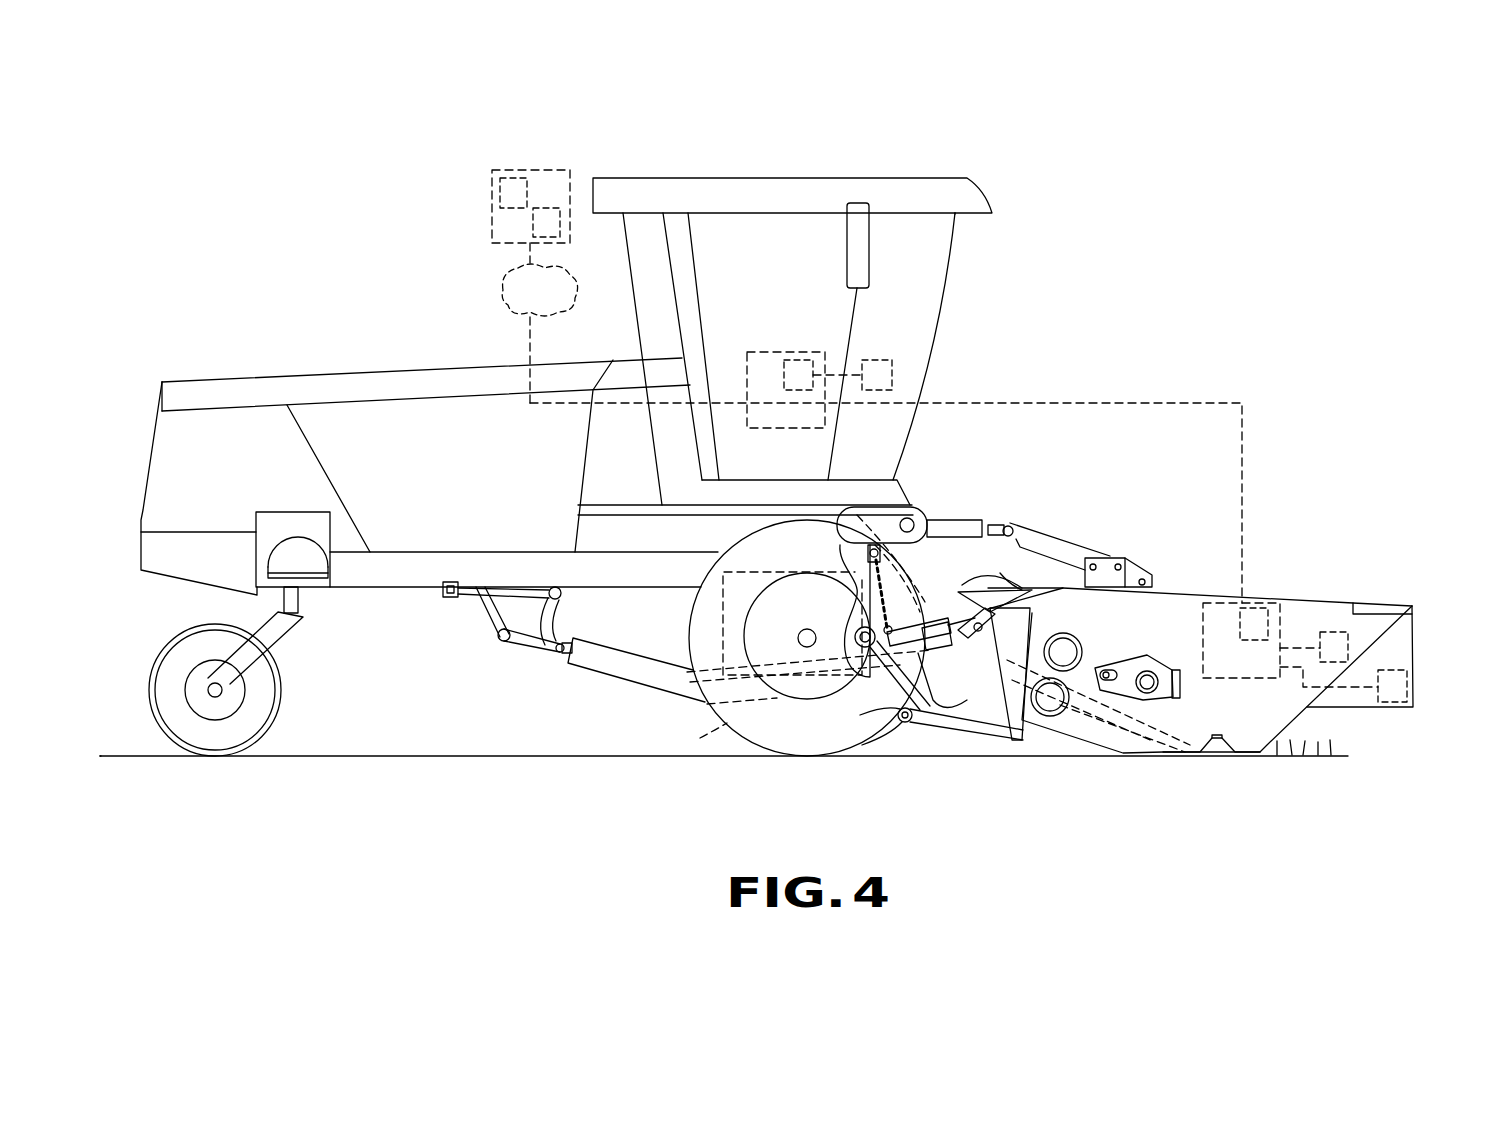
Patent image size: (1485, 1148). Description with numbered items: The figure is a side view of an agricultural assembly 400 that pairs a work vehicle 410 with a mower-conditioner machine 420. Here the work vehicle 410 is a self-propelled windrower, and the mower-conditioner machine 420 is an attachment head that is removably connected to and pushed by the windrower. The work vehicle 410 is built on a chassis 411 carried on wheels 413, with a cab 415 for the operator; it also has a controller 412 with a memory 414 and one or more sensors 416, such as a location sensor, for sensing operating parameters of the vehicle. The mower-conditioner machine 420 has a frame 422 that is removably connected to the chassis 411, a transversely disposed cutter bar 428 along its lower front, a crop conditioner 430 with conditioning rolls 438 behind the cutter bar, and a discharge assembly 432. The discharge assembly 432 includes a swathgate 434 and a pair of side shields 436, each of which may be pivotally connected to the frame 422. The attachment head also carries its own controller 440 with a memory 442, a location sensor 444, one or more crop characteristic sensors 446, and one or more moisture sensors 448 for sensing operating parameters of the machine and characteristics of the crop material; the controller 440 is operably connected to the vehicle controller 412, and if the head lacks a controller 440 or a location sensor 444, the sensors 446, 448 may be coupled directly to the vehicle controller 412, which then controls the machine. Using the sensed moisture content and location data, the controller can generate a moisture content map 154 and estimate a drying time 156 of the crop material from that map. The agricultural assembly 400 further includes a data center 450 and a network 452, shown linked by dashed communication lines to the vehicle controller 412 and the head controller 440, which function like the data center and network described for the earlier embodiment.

The agricultural assembly 400 is at (335, 236).
The work vehicle 410 is at (891, 172).
The chassis 411 is at (377, 578).
The controller 412 is at (772, 352).
The wheels 413 is at (267, 712).
The memory 414 is at (797, 360).
The cab 415 is at (950, 270).
The sensor 416 is at (877, 360).
The mower-conditioner machine 420 is at (1225, 651).
The frame 422 is at (1375, 600).
The cutter bar 428 is at (1249, 764).
The crop conditioner 430 is at (1074, 716).
The discharge assembly 432 is at (921, 620).
The swathgate 434 is at (938, 630).
The side shields 436 is at (982, 700).
The conditioning rolls 438 is at (1072, 637).
The controller 440 is at (1210, 603).
The memory 442 is at (1255, 608).
The location sensor 444 is at (1348, 645).
The crop characteristic sensor 446 is at (1395, 703).
The moisture sensor 448 is at (890, 692).
The data center 450 is at (492, 227).
The network 452 is at (502, 298).
The moisture content map 154 is at (547, 208).
The drying time 156 is at (512, 178).